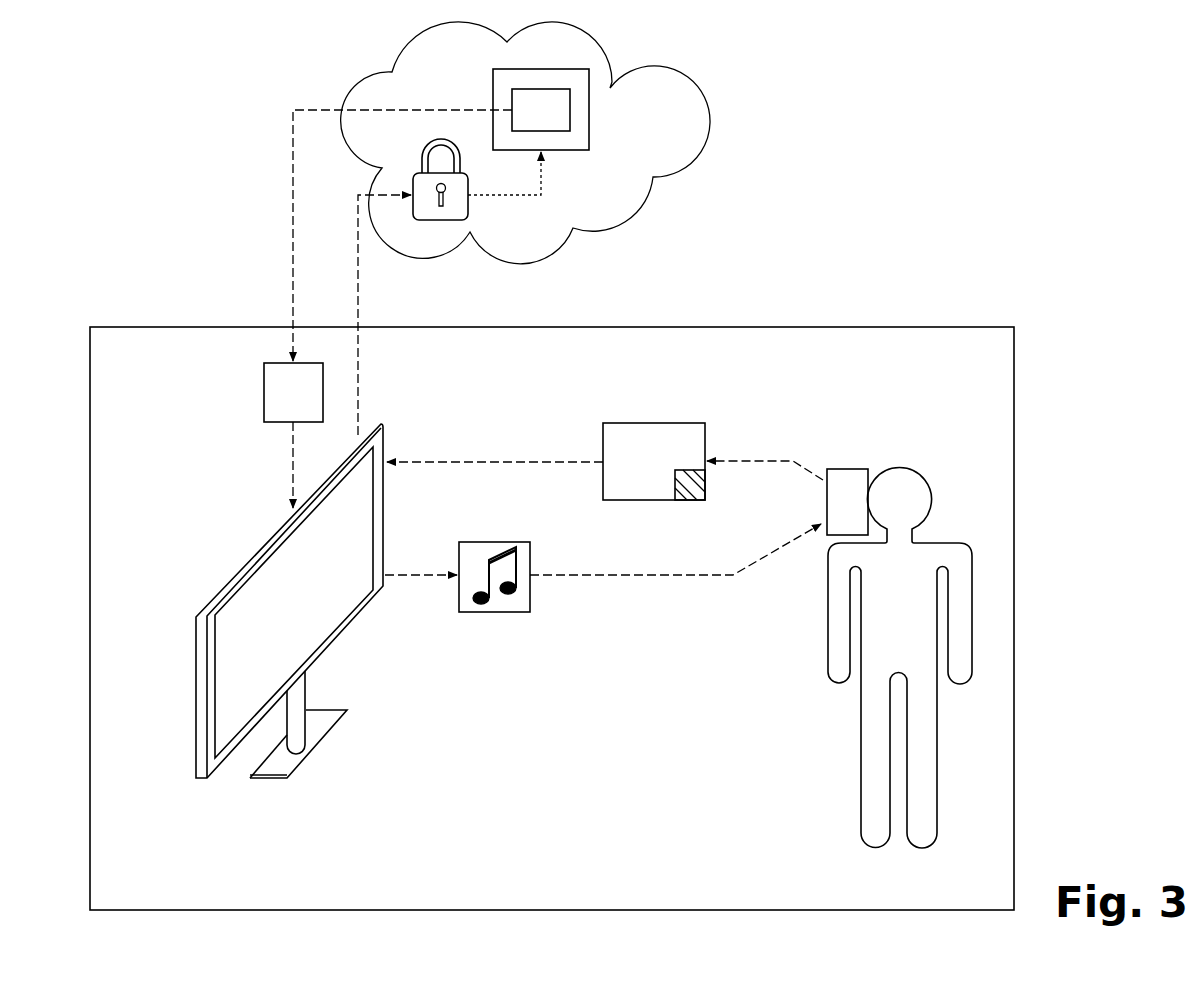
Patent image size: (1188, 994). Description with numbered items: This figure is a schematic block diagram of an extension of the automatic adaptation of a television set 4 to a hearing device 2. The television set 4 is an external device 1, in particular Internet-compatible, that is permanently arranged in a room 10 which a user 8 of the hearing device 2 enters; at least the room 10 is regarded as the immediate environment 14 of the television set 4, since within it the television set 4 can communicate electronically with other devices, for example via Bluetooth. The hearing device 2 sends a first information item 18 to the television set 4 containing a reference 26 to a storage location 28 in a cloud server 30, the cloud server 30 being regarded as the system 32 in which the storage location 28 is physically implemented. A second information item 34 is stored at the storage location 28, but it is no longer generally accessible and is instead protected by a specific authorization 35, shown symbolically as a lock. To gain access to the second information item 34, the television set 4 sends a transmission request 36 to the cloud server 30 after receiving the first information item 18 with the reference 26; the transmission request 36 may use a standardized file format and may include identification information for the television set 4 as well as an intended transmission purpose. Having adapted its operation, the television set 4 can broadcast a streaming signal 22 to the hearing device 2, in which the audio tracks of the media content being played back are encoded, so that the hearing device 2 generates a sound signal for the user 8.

The external device 1 is at (289, 601).
The television set 4 is at (230, 580).
The hearing device 2 is at (845, 469).
The user 8 is at (897, 469).
The room 10 is at (594, 618).
The immediate environment 14 is at (968, 382).
The first information item 18 is at (650, 423).
The streaming signal 22 is at (497, 612).
The reference 26 is at (690, 500).
The storage location 28 is at (578, 80).
The cloud server 30 is at (591, 143).
The system 32 is at (710, 123).
The second information item 34 is at (570, 117).
The authorization 35 is at (468, 200).
The transmission request 36 is at (358, 298).